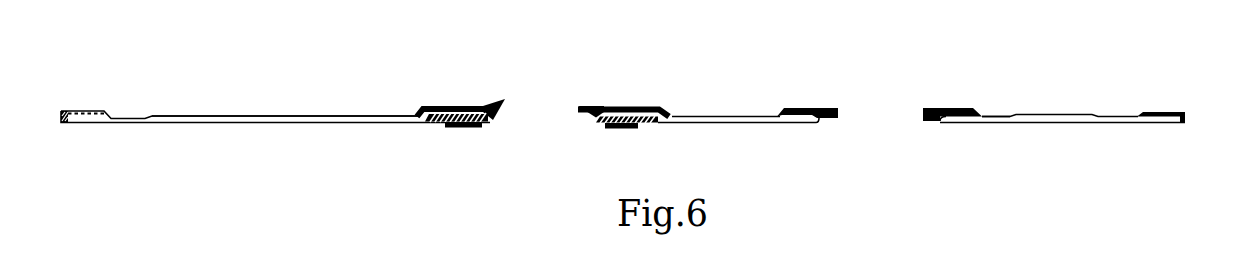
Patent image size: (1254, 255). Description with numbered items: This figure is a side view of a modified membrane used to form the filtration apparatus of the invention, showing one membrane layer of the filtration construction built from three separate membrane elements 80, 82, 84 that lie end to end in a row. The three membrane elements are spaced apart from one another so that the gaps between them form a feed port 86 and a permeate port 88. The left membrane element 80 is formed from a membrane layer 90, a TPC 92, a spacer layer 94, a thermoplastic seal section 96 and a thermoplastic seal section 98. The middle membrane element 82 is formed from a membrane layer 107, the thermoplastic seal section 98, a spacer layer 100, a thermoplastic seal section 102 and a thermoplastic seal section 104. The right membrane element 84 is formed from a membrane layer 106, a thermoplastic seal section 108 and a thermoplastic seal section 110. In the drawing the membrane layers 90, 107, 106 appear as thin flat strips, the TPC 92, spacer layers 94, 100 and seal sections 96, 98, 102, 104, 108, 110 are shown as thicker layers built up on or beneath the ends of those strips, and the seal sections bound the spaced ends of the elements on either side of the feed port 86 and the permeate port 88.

The membrane element 80 is at (191, 100).
The membrane element 82 is at (722, 100).
The membrane element 84 is at (1082, 99).
The feed port 86 is at (527, 110).
The permeate port 88 is at (873, 107).
The membrane layer 90 is at (307, 117).
The TPC 92 is at (443, 105).
The spacer layer 94 is at (428, 123).
The thermoplastic seal section 96 is at (461, 128).
The thermoplastic seal section 98 is at (72, 108).
The spacer layer 100 is at (647, 126).
The thermoplastic seal section 102 is at (613, 130).
The thermoplastic seal section 104 is at (805, 108).
The membrane layer 106 is at (997, 115).
The membrane layer 107 is at (677, 116).
The thermoplastic seal section 108 is at (946, 110).
The thermoplastic seal section 110 is at (1162, 110).